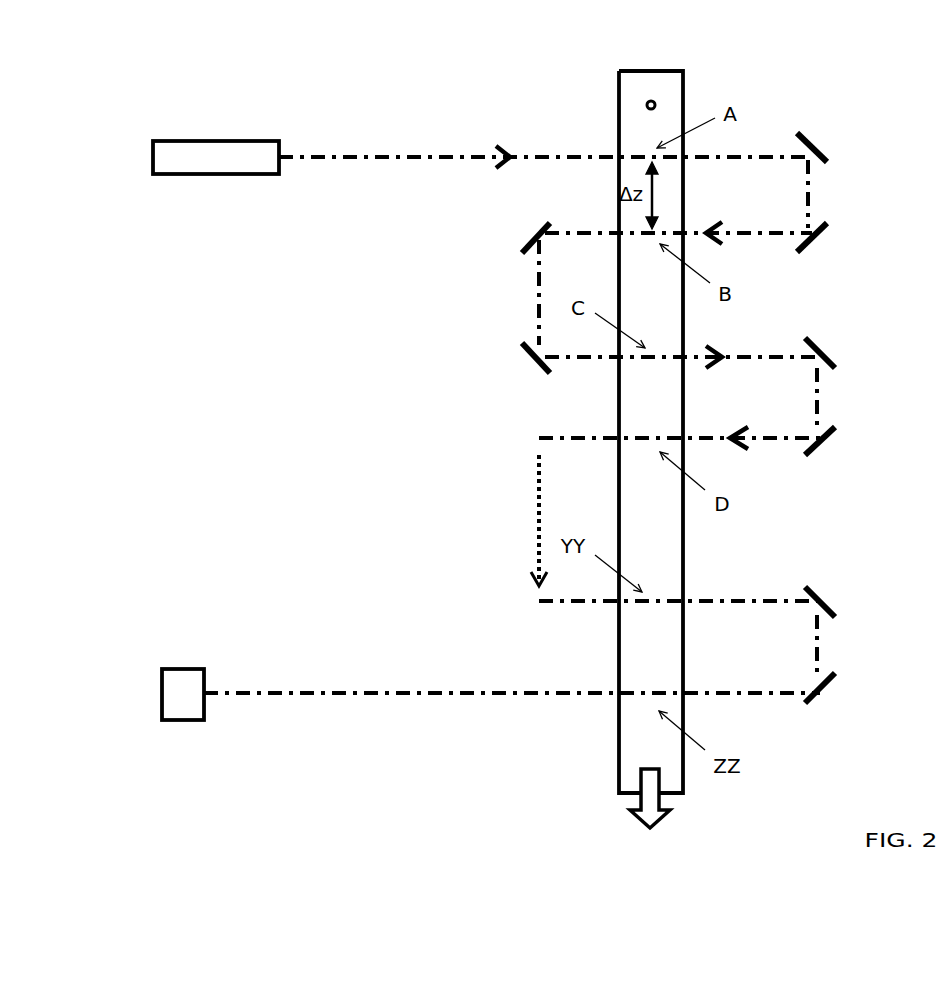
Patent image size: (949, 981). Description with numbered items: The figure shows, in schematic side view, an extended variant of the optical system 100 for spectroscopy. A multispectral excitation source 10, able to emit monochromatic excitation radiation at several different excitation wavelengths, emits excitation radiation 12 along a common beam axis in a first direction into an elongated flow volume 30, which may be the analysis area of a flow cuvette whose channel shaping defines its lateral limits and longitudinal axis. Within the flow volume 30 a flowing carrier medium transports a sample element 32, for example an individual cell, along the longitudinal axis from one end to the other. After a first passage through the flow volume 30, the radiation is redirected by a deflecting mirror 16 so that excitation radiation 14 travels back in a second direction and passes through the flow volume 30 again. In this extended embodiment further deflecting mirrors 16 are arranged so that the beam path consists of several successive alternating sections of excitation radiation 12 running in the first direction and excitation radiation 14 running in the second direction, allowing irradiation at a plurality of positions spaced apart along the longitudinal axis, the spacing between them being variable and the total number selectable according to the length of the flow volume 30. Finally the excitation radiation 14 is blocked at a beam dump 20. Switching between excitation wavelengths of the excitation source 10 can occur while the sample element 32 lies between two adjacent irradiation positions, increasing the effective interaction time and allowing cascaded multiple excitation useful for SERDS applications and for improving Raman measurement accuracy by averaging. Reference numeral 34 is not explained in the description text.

The multispectral excitation source 10 is at (194, 135).
The excitation radiation 12 is at (378, 152).
The excitation radiation 14 is at (776, 238).
The deflecting mirror 16 is at (830, 165).
The beam dump 20 is at (163, 722).
The flow volume 30 is at (611, 72).
The sample element 32 is at (637, 100).
The sample surface / window 34 is at (637, 137).
The optical system 100 is at (388, 348).